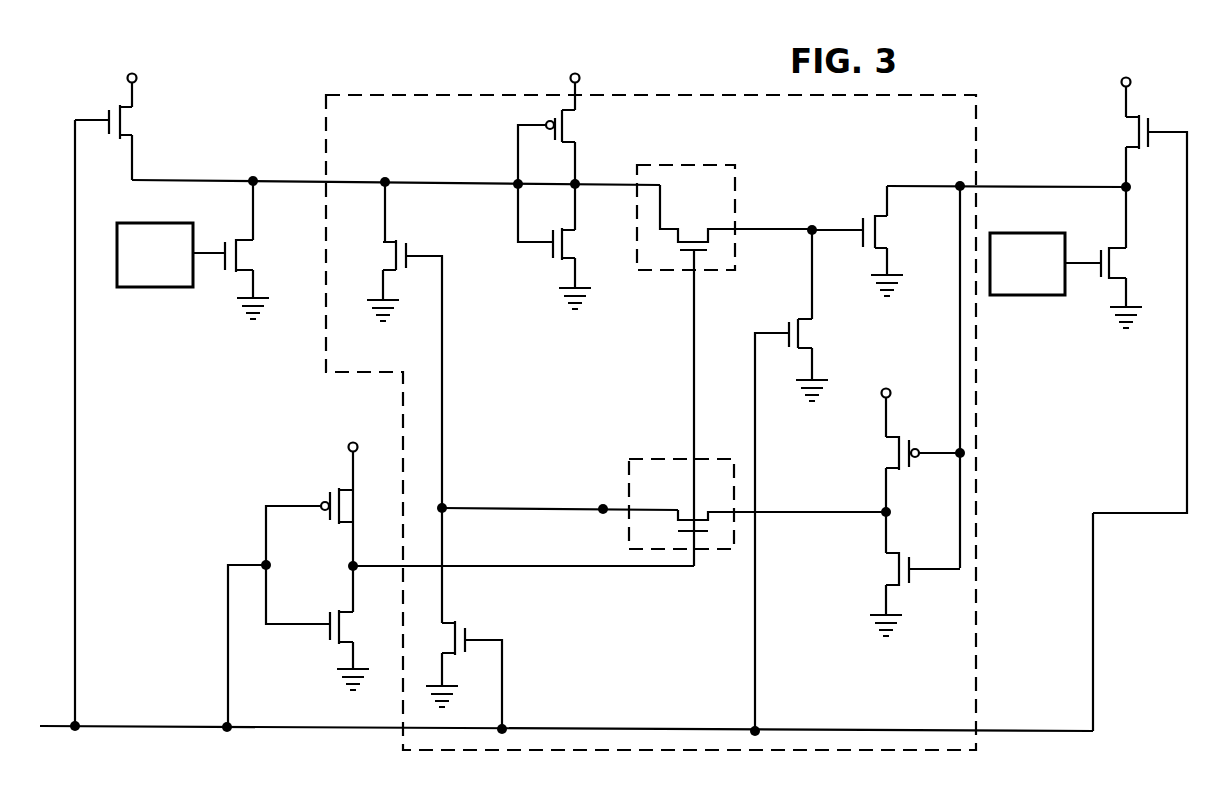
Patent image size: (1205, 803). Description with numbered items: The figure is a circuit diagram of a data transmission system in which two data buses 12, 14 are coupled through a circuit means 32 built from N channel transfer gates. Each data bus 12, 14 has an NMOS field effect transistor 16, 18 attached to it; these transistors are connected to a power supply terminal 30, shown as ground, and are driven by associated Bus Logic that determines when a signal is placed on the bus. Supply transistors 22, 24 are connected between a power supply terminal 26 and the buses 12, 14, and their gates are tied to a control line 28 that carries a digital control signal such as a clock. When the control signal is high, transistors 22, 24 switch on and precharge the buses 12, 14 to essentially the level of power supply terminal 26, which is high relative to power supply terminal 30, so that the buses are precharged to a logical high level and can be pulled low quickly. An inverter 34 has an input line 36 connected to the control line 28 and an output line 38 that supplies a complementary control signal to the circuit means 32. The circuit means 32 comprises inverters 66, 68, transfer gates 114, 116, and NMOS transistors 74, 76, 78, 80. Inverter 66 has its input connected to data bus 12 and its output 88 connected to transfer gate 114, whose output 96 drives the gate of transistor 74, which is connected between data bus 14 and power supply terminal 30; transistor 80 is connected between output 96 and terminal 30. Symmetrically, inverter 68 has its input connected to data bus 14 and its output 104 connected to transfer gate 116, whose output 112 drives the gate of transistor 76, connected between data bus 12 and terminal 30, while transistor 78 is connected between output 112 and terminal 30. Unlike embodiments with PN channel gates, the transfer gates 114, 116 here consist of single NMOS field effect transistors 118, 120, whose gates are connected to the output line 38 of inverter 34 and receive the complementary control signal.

The data bus 12 is at (200, 180).
The data bus 14 is at (1033, 186).
The NMOS field effect transistor 16 is at (247, 270).
The NMOS field effect transistor 18 is at (1117, 278).
The field effect transistor 22 is at (132, 135).
The field effect transistor 24 is at (1135, 140).
The power supply terminal 26 is at (136, 75).
The control line 28 is at (52, 727).
The power supply terminal 30 is at (243, 307).
The circuit means 32 is at (438, 90).
The inverter 34 is at (262, 493).
The input line 36 is at (243, 563).
The output line 38 is at (383, 563).
The inverter 66 is at (512, 138).
The inverter 68 is at (873, 557).
The transistor 74 is at (885, 247).
The transistor 76 is at (387, 240).
The transistor 78 is at (452, 623).
The transistor 80 is at (805, 315).
The output 88 is at (573, 182).
The output 96 is at (811, 225).
The output 104 is at (890, 512).
The output 112 is at (603, 503).
The transfer gate 114 is at (665, 160).
The transfer gate 116 is at (678, 456).
The NMOS field effect transistor 118 is at (678, 237).
The NMOS field effect transistor 120 is at (680, 515).